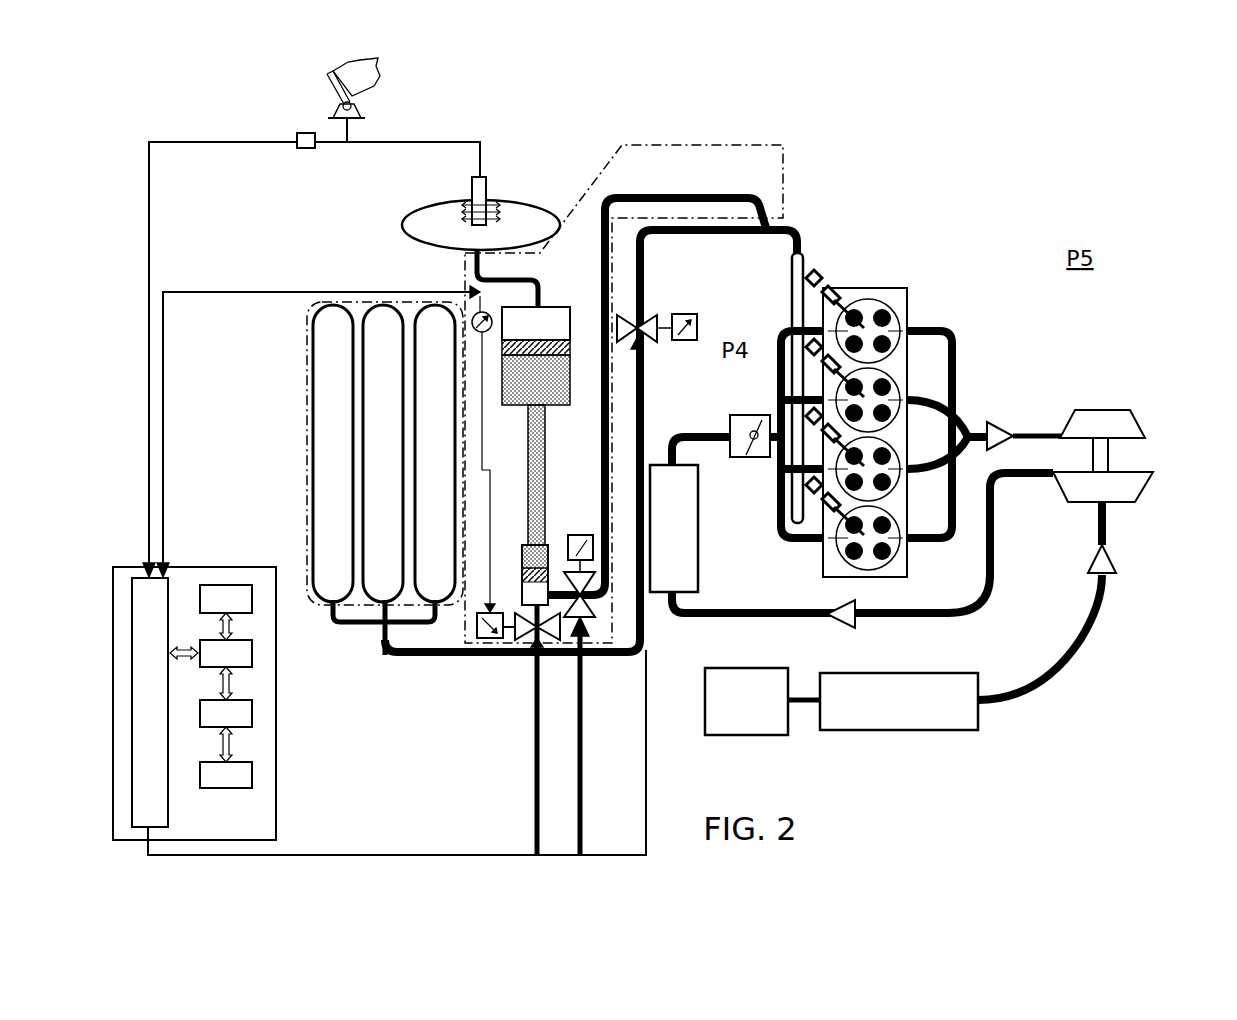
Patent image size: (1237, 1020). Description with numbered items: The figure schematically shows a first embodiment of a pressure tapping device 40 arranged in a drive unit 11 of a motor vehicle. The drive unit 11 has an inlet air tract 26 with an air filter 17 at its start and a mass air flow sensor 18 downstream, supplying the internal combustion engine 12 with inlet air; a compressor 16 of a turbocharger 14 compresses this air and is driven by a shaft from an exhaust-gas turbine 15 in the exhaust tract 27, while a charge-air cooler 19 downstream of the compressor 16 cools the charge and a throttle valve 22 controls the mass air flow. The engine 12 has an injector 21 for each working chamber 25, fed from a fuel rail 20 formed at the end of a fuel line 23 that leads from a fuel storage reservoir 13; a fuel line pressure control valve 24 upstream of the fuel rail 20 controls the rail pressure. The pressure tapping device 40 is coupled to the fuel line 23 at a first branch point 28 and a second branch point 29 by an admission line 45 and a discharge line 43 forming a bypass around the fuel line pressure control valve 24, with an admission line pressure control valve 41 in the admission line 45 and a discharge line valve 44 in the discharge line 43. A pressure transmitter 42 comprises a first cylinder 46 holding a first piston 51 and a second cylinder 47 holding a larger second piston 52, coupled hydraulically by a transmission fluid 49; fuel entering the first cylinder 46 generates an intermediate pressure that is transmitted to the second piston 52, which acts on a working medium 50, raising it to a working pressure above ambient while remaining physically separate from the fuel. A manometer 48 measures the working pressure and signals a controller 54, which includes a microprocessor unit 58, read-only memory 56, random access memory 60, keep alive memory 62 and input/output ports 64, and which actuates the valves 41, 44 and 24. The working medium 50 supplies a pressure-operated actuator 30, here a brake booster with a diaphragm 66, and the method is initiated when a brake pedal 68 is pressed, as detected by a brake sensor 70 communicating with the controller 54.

The drive unit 11 is at (1015, 180).
The internal combustion engine 12 is at (950, 300).
The fuel storage reservoir 13 is at (307, 322).
The turbocharger 14 is at (1128, 392).
The exhaust-gas turbine 15 is at (1130, 412).
The compressor 16 is at (1148, 480).
The air filter 17 is at (762, 701).
The mass air flow sensor 18 is at (899, 701).
The charge-air cooler 19 is at (674, 528).
The fuel rail 20 is at (792, 300).
The injector 21 is at (835, 280).
The throttle valve 22 is at (755, 460).
The fuel line 23 is at (718, 236).
The fuel line pressure control valve 24 is at (652, 320).
The working chamber 25 is at (880, 300).
The inlet air tract 26 is at (998, 590).
The exhaust tract 27 is at (1030, 430).
The first branch point 28 is at (537, 665).
The second branch point 29 is at (797, 228).
The pressure-operated actuator 30 is at (472, 200).
The pressure tapping device 40 is at (622, 145).
The admission line pressure control valve 41 is at (548, 655).
The pressure transmitter 42 is at (560, 276).
The discharge line 43 is at (722, 198).
The discharge line valve 44 is at (592, 655).
The admission line 45 is at (495, 660).
The first cylinder 46 is at (550, 560).
The second cylinder 47 is at (562, 400).
The manometer 48 is at (472, 315).
The transmission fluid 49 is at (528, 460).
The working medium 50 is at (565, 314).
The first piston 51 is at (522, 560).
The second piston 52 is at (490, 470).
The controller 54 is at (232, 567).
The read-only memory 56 is at (252, 598).
The microprocessor unit 58 is at (252, 652).
The random access memory 60 is at (252, 712).
The keep alive memory 62 is at (252, 773).
The input/output ports 64 is at (168, 590).
The diaphragm 66 is at (430, 222).
The brake pedal 68 is at (335, 105).
The brake sensor 70 is at (315, 148).